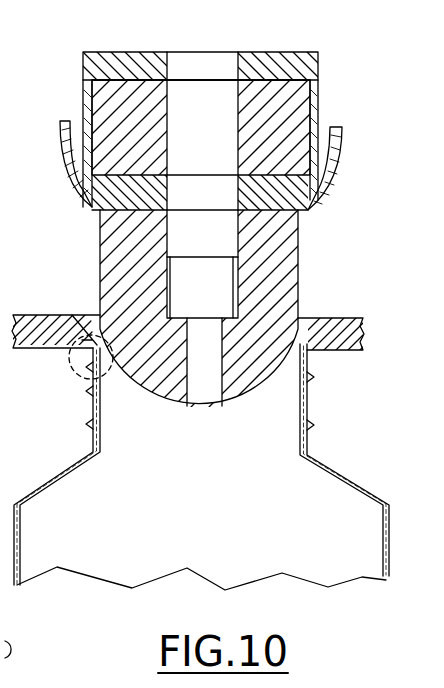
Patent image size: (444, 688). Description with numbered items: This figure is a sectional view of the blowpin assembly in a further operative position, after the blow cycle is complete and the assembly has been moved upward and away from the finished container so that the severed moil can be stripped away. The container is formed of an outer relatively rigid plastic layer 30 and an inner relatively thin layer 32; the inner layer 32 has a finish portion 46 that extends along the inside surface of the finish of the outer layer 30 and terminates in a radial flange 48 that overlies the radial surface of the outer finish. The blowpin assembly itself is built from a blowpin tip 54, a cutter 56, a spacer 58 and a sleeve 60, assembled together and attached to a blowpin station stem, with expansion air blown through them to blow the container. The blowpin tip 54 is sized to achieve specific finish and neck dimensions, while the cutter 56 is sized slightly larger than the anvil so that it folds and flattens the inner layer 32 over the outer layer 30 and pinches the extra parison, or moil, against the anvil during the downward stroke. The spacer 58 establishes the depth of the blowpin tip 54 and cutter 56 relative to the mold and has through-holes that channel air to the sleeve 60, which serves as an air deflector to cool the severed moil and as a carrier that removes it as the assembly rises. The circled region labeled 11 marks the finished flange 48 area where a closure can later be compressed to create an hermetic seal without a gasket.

The detail region 11 is at (82, 373).
The outer layer 30 is at (388, 575).
The inner layer 32 is at (102, 443).
The finish portion 46 is at (101, 391).
The radial flange 48 is at (97, 338).
The blowpin tip 54 is at (295, 268).
The cutter 56 is at (308, 209).
The spacer 58 is at (302, 100).
The sleeve 60 is at (273, 62).